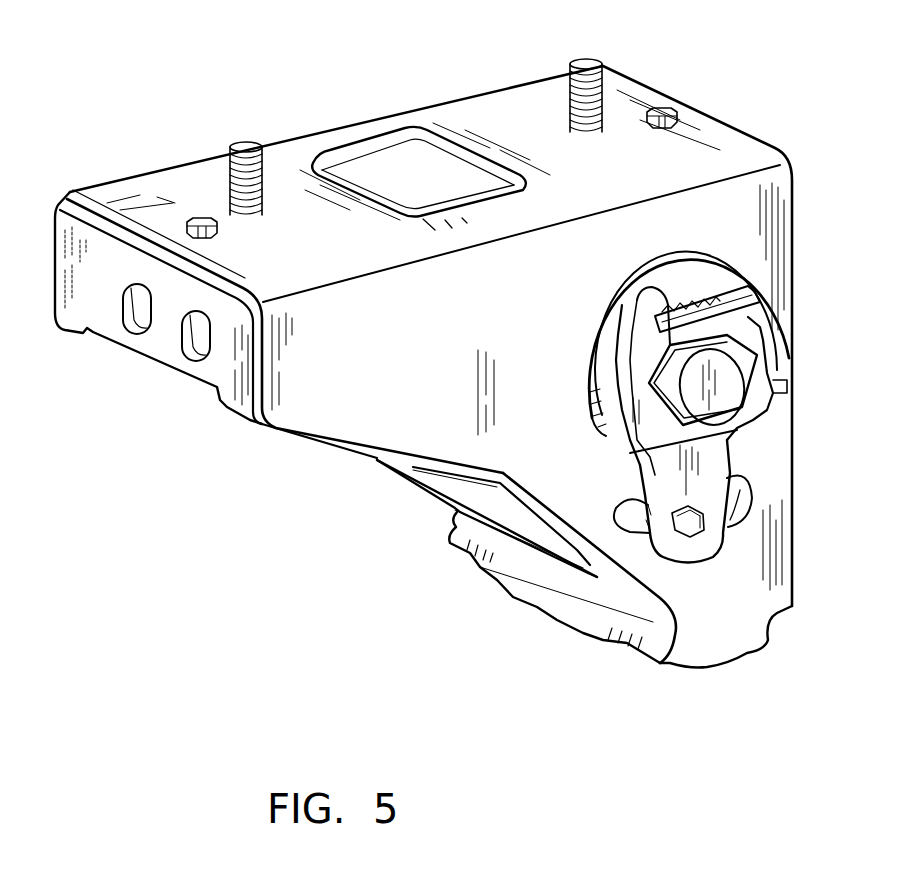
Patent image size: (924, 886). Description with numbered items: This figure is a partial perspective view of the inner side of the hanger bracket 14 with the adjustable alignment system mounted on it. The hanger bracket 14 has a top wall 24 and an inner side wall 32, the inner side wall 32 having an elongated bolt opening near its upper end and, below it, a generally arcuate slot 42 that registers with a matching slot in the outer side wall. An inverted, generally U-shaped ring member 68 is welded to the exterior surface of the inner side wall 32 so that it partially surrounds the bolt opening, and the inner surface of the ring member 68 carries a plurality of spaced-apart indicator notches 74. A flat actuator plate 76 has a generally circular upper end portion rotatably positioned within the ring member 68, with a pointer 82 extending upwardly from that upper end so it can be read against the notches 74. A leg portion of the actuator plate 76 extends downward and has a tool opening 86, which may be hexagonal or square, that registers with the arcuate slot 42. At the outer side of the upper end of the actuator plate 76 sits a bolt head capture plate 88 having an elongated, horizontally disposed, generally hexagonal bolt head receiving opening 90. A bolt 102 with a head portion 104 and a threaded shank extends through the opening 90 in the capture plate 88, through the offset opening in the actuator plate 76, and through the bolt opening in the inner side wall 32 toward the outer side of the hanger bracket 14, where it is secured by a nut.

The hanger bracket 14 is at (768, 108).
The top wall 24 is at (632, 174).
The inner side wall 32 is at (396, 343).
The arcuate slot 42 is at (742, 486).
The ring member 68 is at (692, 256).
The indicator notches 74 is at (735, 259).
The actuator plate 76 is at (648, 468).
The pointer 82 is at (630, 350).
The tool opening 86 is at (704, 533).
The bolt head capture plate 88 is at (752, 318).
The bolt head receiving opening 90 is at (748, 349).
The bolt 102 is at (720, 390).
The head portion 104 is at (670, 407).